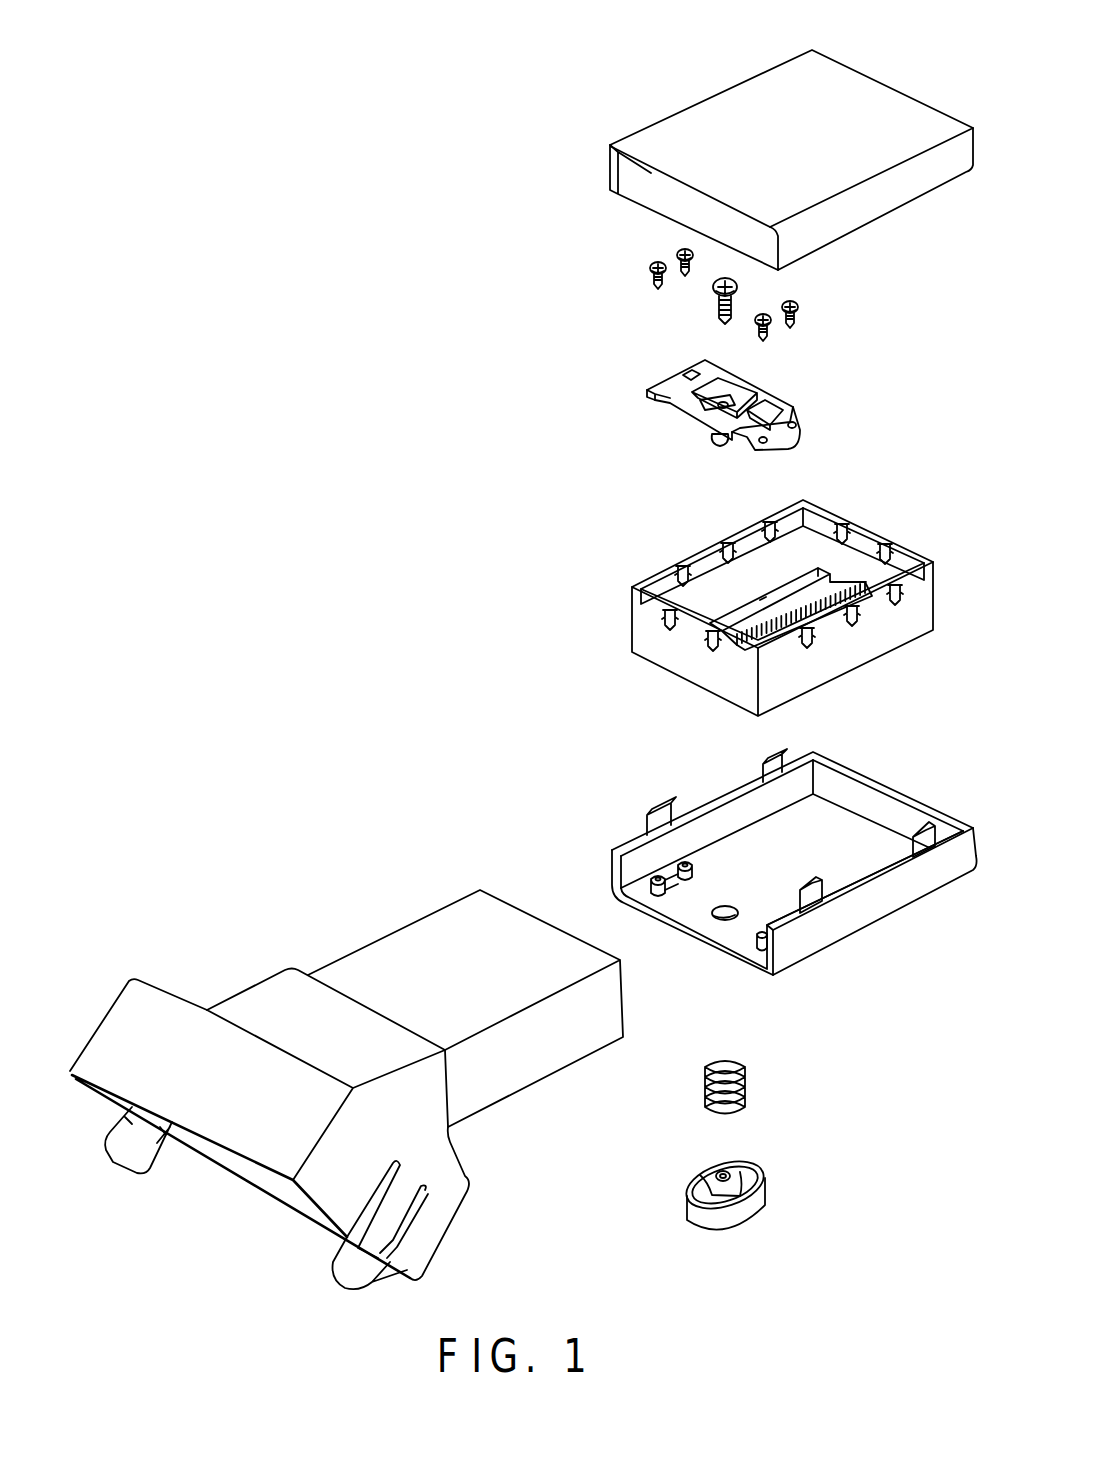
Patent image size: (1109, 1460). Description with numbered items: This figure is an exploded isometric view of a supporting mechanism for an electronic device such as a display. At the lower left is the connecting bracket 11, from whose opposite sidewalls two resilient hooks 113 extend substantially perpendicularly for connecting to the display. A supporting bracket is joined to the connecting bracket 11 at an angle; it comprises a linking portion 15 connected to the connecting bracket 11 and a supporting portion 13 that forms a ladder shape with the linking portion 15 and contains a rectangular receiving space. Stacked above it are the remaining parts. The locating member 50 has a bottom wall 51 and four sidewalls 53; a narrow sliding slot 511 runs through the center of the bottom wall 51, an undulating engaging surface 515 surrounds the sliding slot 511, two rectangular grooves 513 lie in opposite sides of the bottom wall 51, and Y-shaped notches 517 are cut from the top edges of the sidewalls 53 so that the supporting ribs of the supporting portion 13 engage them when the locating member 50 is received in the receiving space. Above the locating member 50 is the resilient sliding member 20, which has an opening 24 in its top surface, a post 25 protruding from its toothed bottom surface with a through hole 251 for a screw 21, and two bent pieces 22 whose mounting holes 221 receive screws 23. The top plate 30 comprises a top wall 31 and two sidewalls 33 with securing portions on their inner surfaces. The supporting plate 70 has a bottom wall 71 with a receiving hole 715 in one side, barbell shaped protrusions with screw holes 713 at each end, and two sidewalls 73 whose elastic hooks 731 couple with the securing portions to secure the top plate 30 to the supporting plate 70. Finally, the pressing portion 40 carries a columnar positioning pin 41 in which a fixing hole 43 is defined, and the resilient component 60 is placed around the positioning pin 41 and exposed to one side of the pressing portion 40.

The connecting bracket 11 is at (136, 1020).
The resilient hooks 113 is at (130, 1152).
The supporting portion 13 is at (440, 938).
The linking portion 15 is at (258, 1010).
The resilient sliding member 20 is at (716, 408).
The screw 21 is at (708, 291).
The bent pieces 22 is at (800, 432).
The mounting holes 221 is at (802, 422).
The screws 23 is at (652, 262).
The opening 24 is at (748, 390).
The post 25 is at (718, 438).
The through hole 251 is at (712, 402).
The top plate 30 is at (765, 161).
The top wall 31 is at (672, 85).
The sidewalls 33 is at (876, 200).
The pressing portion 40 is at (722, 1196).
The positioning pin 41 is at (698, 1201).
The fixing hole 43 is at (727, 1172).
The locating member 50 is at (716, 603).
The bottom wall 51 is at (795, 588).
The sliding slot 511 is at (812, 637).
The grooves 513 is at (764, 593).
The engaging surface 515 is at (718, 627).
The notches 517 is at (681, 568).
The sidewalls 53 is at (864, 548).
The resilient component 60 is at (745, 1085).
The supporting plate 70 is at (743, 899).
The bottom wall 71 is at (622, 790).
The screw holes 713 is at (658, 878).
The receiving hole 715 is at (718, 922).
The sidewalls 73 is at (902, 893).
The elastic hooks 731 is at (818, 905).